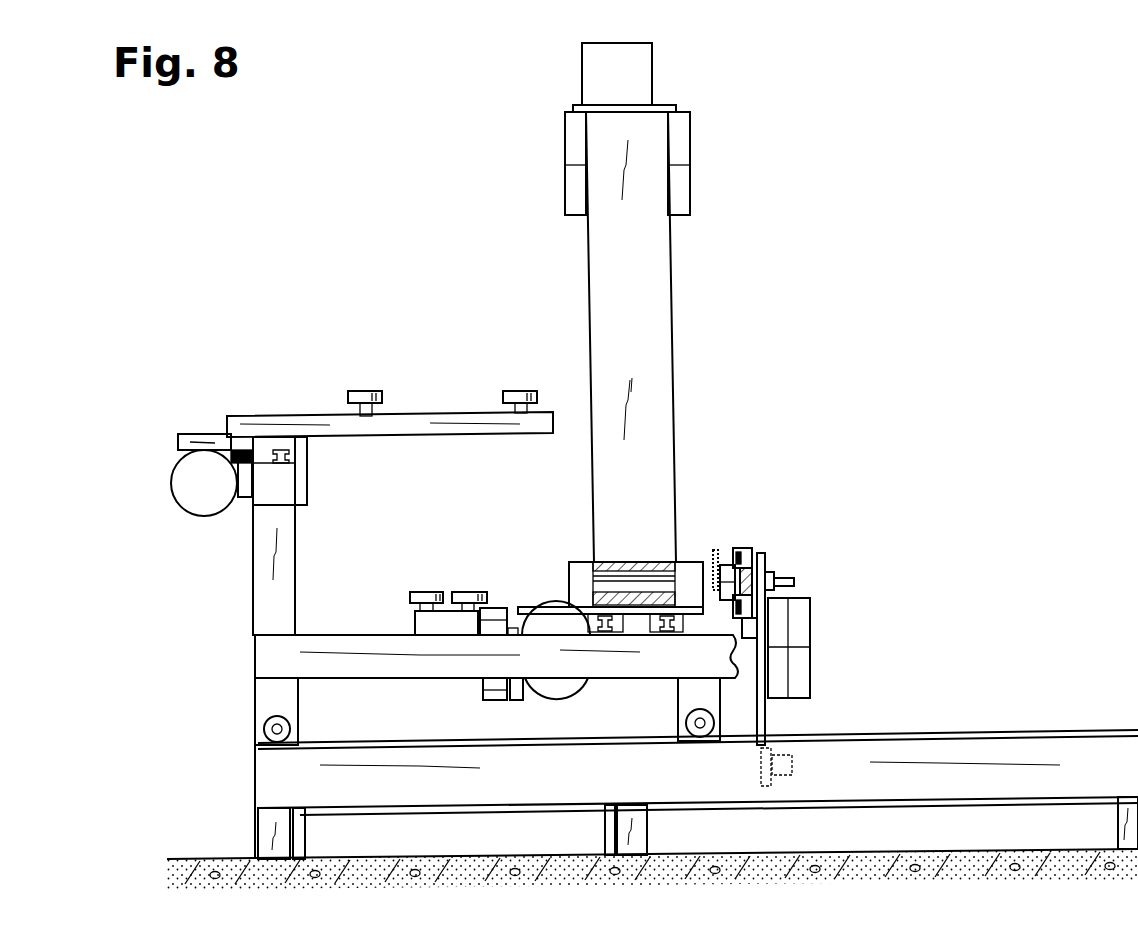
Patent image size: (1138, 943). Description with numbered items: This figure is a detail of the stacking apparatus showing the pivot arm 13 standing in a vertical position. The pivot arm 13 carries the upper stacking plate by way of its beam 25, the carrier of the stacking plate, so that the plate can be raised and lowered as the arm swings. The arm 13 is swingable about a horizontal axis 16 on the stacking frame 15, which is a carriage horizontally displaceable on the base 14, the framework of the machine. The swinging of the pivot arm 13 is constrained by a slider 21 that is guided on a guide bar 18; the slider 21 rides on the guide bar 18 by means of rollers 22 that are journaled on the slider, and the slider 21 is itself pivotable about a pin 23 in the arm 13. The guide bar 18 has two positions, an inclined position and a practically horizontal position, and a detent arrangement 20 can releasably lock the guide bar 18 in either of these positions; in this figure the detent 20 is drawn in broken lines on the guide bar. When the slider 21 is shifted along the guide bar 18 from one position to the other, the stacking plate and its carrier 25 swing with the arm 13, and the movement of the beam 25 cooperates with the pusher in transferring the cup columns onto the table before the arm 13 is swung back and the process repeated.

The pivot arm 13 is at (658, 296).
The base 14 is at (908, 752).
The stacking frame 15 is at (262, 700).
The horizontal axis 16 is at (628, 580).
The guide bar 18 is at (765, 572).
The detent arrangement 20 is at (796, 584).
The slider 21 is at (728, 596).
The rollers 22 is at (748, 560).
The pin 23 is at (714, 585).
The beam 25 is at (676, 150).